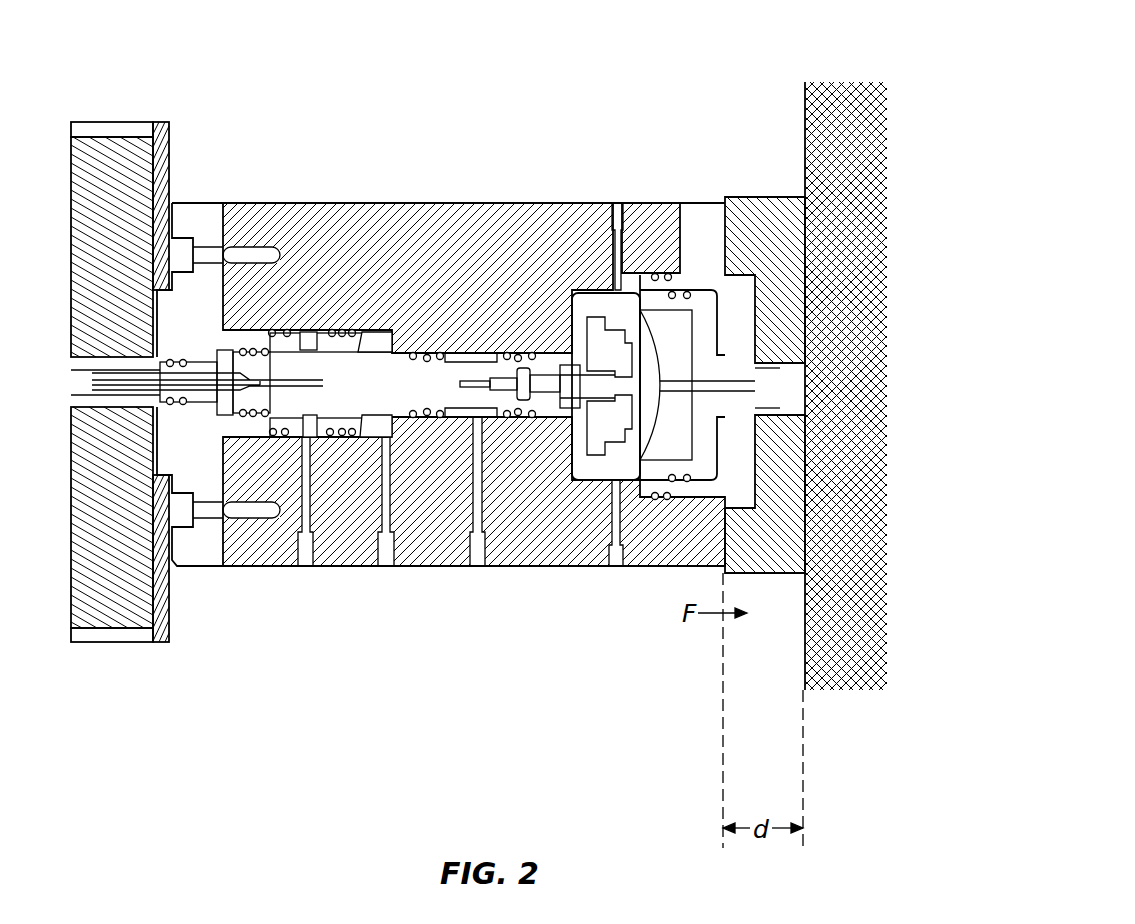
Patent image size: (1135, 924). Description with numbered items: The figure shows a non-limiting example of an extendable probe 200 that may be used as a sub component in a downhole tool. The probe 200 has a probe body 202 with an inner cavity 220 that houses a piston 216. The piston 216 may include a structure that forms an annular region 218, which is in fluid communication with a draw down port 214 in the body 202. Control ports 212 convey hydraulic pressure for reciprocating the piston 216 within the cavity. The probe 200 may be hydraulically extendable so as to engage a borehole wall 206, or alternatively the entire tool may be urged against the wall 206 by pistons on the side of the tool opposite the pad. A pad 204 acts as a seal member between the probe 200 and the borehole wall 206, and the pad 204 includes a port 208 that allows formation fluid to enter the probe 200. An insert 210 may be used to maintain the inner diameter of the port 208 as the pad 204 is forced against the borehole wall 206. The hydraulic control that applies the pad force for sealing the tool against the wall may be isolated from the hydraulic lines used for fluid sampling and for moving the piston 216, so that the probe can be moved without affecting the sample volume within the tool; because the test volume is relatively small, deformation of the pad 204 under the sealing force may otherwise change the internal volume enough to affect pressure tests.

The extendable probe 200 is at (678, 62).
The probe body 202 is at (474, 381).
The pad 204 is at (767, 197).
The borehole wall 206 is at (805, 117).
The port 208 is at (805, 390).
The insert 210 is at (805, 363).
The control ports 212 is at (302, 566).
The draw down port 214 is at (474, 566).
The piston 216 is at (280, 333).
The annular region 218 is at (460, 357).
The inner cavity 220 is at (600, 303).